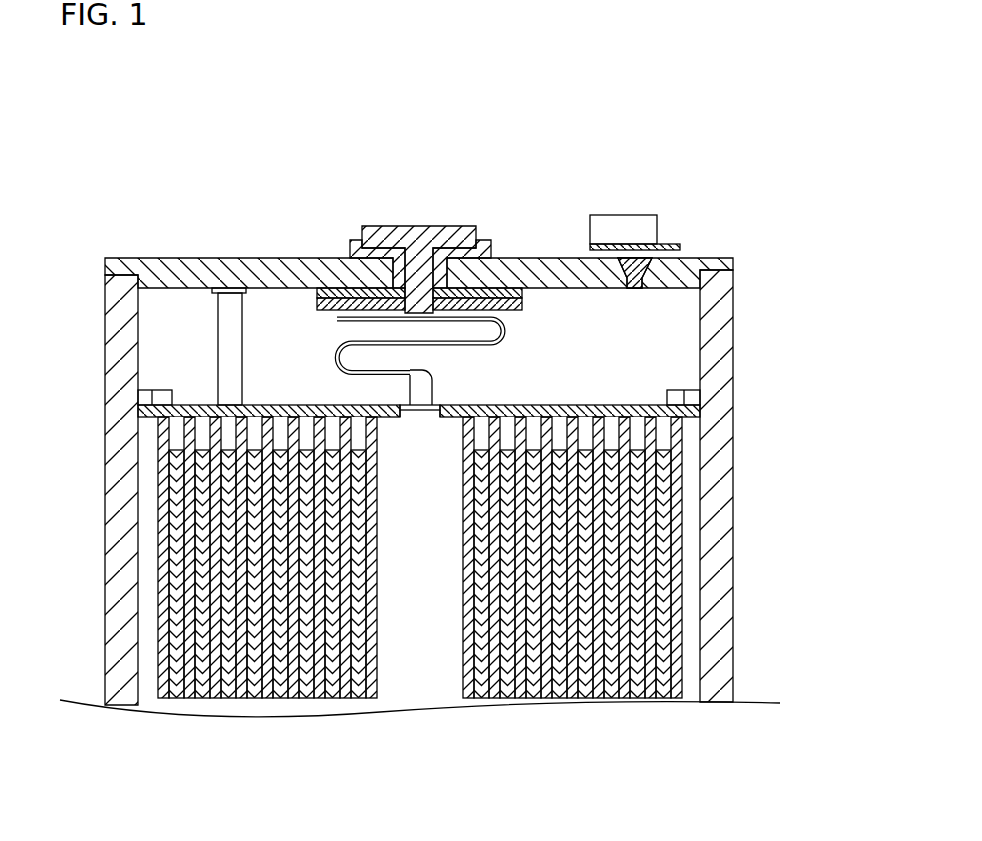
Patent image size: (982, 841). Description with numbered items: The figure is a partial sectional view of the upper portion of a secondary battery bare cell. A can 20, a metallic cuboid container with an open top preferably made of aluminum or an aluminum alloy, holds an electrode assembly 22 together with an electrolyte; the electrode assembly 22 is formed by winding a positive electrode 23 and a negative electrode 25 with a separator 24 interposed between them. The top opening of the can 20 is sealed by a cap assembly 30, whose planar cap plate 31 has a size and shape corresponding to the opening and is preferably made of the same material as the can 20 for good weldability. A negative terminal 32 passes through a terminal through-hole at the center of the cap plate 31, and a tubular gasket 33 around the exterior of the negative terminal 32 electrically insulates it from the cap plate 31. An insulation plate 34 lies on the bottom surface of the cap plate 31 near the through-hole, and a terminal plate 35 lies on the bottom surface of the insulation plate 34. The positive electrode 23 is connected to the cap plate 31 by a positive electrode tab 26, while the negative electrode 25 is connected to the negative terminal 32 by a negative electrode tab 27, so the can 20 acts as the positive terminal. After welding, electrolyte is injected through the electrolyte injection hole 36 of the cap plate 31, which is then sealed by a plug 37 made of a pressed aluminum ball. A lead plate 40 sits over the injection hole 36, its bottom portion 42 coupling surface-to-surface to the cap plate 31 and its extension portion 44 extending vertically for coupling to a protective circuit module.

The can 20 is at (727, 580).
The electrode assembly 22 is at (488, 591).
The positive electrode 23 is at (663, 693).
The separator 24 is at (677, 695).
The negative electrode 25 is at (640, 697).
The positive electrode tab 26 is at (223, 342).
The negative electrode tab 27 is at (333, 363).
The cap assembly 30 is at (463, 244).
The cap plate 31 is at (232, 268).
The negative terminal 32 is at (417, 238).
The tubular gasket 33 is at (483, 240).
The insulation plate 34 is at (313, 300).
The terminal plate 35 is at (505, 320).
The electrolyte injection hole 36 is at (633, 288).
The plug 37 is at (650, 259).
The lead plate 40 is at (698, 194).
The bottom portion 42 is at (636, 218).
The extension portion 44 is at (673, 242).